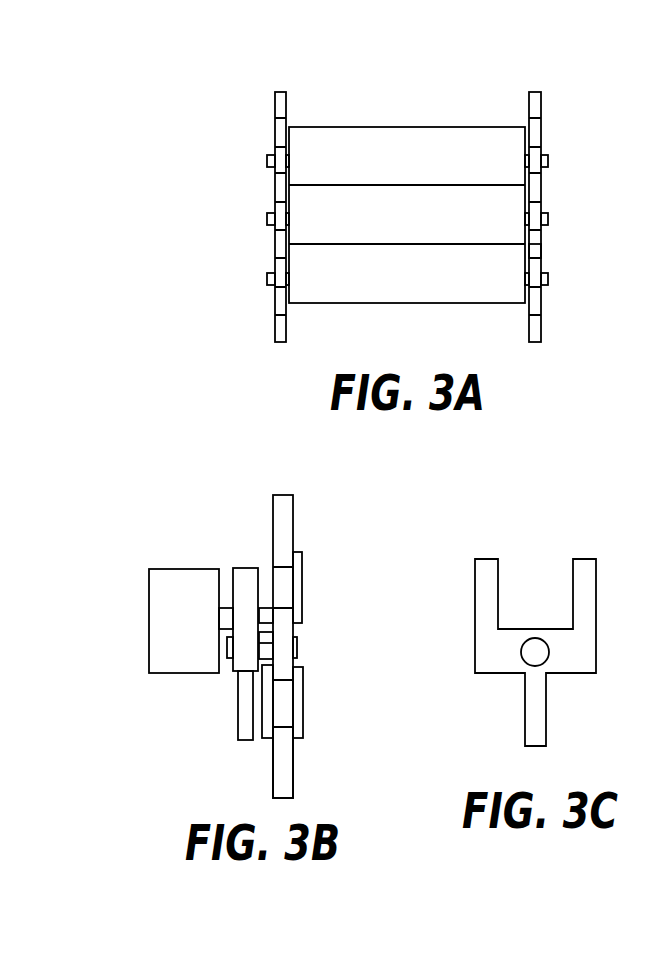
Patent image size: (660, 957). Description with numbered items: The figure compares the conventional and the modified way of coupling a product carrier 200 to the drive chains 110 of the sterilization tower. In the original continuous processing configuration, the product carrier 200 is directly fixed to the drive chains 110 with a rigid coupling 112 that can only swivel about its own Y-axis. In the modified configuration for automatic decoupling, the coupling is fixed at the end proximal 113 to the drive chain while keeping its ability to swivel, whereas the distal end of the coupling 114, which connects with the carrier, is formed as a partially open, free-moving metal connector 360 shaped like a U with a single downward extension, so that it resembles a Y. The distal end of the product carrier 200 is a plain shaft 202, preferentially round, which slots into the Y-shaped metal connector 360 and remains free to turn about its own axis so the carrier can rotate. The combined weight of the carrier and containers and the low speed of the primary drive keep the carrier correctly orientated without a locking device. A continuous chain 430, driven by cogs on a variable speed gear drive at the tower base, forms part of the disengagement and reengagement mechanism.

In FIG. 3A, the drive chains 110 is at (537, 323).
In FIG. 3B, the drive chains 110 is at (294, 512).
In FIG. 3A, the rigid coupling 112 is at (549, 214).
In FIG. 3B, the proximal end 113 is at (298, 645).
In FIG. 3C, the proximal end 113 is at (525, 658).
In FIG. 3B, the distal end of the coupling 114 is at (263, 645).
In FIG. 3A, the product carrier 200 is at (355, 303).
In FIG. 3B, the product carrier 200 is at (153, 608).
In FIG. 3B, the plain shaft 202 is at (227, 608).
In FIG. 3B, the metal connector 360 is at (248, 575).
In FIG. 3C, the metal connector 360 is at (596, 628).
In FIG. 3A, the continuous chain 430 is at (544, 251).
In FIG. 3B, the continuous chain 430 is at (296, 764).